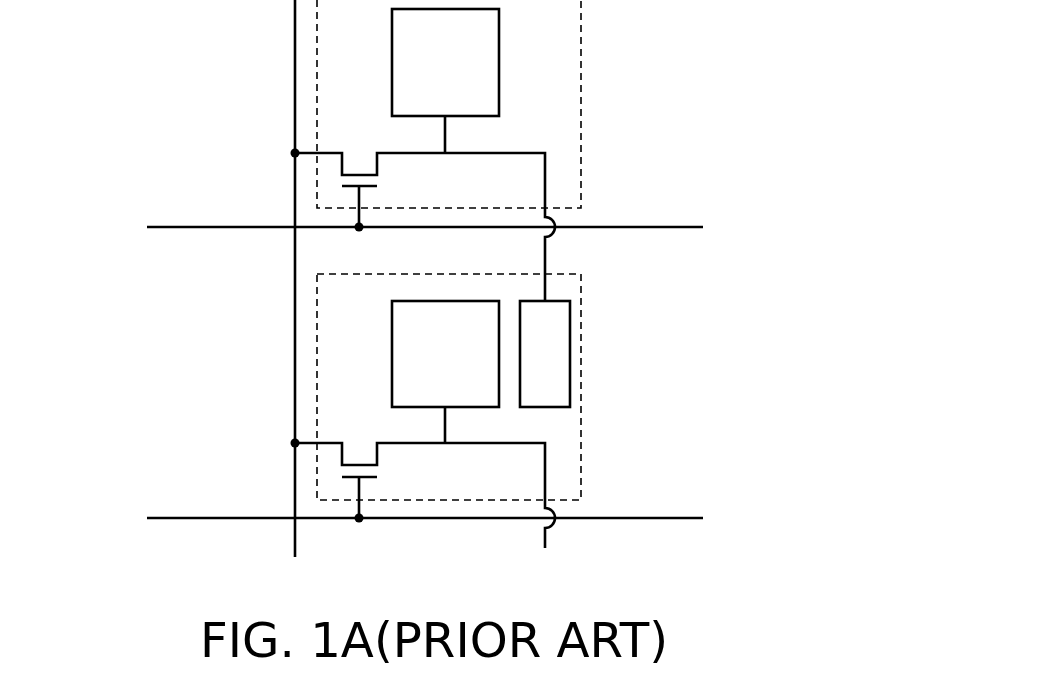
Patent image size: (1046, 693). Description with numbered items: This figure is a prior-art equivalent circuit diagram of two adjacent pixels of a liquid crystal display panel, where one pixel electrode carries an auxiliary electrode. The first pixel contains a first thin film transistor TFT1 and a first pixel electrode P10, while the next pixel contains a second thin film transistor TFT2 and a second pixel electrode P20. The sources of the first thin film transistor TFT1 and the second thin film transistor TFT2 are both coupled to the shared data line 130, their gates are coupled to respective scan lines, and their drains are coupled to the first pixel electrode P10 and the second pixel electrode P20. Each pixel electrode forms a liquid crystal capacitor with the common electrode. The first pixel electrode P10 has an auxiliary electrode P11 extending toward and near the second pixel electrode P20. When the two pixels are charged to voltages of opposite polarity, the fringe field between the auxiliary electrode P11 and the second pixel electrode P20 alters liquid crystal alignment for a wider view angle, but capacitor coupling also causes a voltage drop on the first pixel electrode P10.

The data line 130 is at (295, 23).
The first thin film transistor TFT1 is at (423, 211).
The second thin film transistor TFT2 is at (423, 479).
The first pixel electrode P10 is at (472, 79).
The second pixel electrode P20 is at (472, 370).
The auxiliary electrode P11 is at (573, 371).